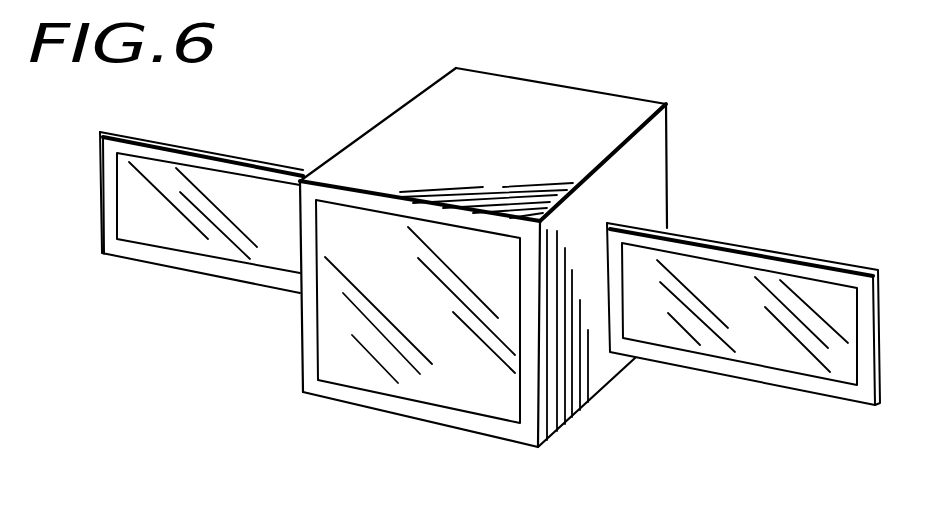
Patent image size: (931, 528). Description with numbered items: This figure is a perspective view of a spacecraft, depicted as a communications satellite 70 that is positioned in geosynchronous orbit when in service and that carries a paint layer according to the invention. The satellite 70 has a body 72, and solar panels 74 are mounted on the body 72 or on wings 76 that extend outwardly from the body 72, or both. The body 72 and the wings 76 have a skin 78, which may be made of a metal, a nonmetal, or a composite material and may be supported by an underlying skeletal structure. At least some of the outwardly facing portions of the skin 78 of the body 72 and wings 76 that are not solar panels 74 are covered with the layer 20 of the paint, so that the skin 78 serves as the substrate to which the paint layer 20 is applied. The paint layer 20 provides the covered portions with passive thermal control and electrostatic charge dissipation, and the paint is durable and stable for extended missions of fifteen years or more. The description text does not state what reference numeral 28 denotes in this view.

The satellite 70 is at (403, 86).
The body 72 is at (571, 98).
The solar panels 74 is at (472, 395).
The wings 76 is at (801, 263).
The skin 78 is at (144, 255).
The layer of paint 20 is at (306, 342).
The stacked panel edges 28 is at (578, 386).